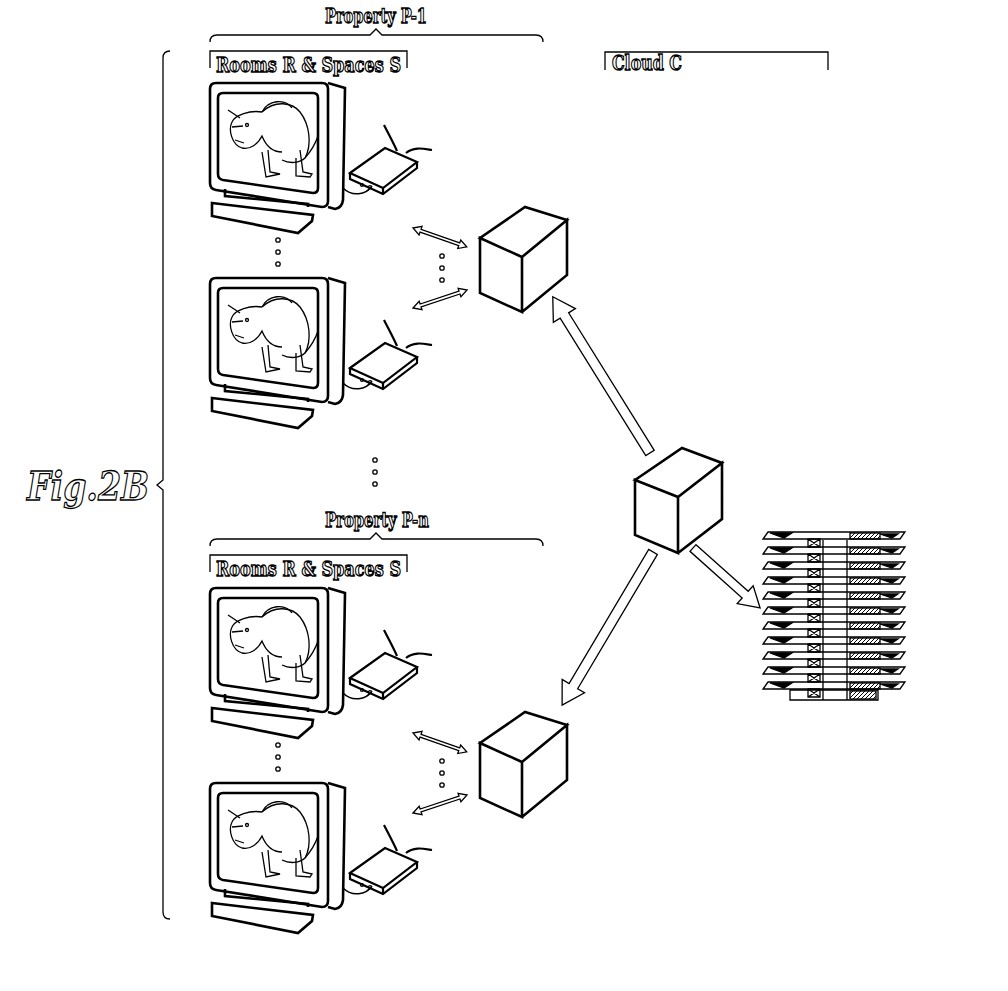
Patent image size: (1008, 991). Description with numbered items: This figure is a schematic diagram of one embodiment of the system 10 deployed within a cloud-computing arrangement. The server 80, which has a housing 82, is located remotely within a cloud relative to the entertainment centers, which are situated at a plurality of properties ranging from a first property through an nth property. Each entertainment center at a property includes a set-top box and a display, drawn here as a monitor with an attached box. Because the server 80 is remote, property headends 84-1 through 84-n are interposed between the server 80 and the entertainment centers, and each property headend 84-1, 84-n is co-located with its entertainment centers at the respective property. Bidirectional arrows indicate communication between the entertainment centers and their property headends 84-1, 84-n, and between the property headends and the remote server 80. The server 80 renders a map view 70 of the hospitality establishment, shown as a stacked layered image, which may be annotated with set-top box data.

The system 10 is at (153, 97).
The map view 70 is at (763, 636).
The server 80 is at (634, 499).
The housing 82 is at (716, 497).
The property headend 84-1 is at (545, 208).
The property headend 84-n is at (545, 713).